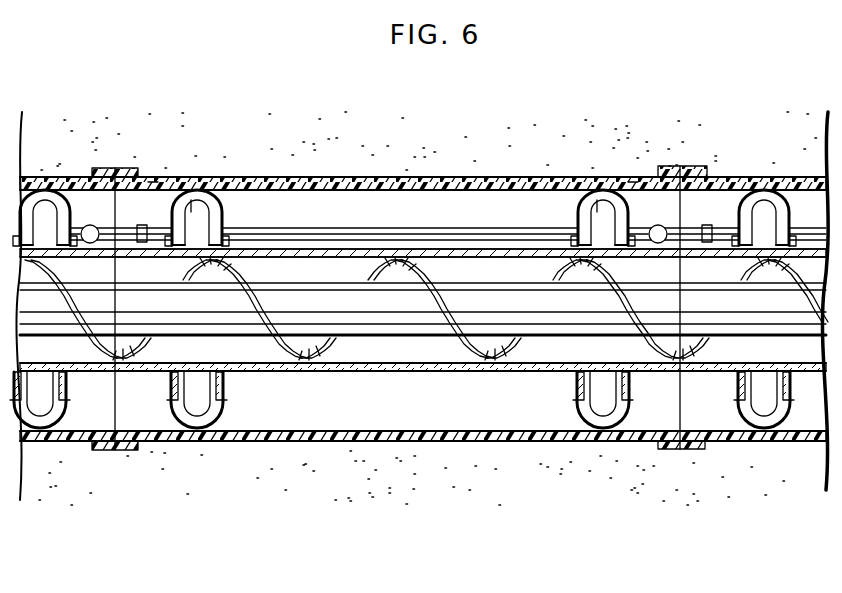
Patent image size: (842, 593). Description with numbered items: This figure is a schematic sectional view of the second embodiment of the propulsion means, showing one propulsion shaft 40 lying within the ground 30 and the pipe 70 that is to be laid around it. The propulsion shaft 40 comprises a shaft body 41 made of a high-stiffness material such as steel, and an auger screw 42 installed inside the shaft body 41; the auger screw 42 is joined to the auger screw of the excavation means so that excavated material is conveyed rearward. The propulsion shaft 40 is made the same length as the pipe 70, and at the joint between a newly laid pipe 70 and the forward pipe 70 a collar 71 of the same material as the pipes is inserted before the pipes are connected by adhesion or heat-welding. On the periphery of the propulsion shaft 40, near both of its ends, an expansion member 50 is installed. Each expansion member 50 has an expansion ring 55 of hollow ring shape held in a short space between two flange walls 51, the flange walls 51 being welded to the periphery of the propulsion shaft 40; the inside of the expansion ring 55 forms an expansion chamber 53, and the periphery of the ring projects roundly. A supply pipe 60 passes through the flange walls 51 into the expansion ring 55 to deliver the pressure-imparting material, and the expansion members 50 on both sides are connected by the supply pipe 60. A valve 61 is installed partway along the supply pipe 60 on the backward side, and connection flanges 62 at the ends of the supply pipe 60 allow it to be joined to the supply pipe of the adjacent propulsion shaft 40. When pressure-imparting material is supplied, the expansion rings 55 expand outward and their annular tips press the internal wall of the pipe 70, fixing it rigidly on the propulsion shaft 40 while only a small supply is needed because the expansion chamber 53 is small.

The ground 30 is at (399, 516).
The propulsion shaft 40 is at (424, 398).
The shaft body 41 is at (380, 372).
The auger screw 42 is at (305, 365).
The expansion member 50 is at (222, 192).
The flange wall 51 is at (222, 222).
The expansion chamber 53 is at (195, 212).
The expansion ring 55 is at (152, 182).
The supply pipe 60 is at (363, 228).
The valve 61 is at (707, 225).
The connection flange 62 is at (665, 226).
The pipe to be laid 70 is at (622, 441).
The collar 71 is at (688, 450).